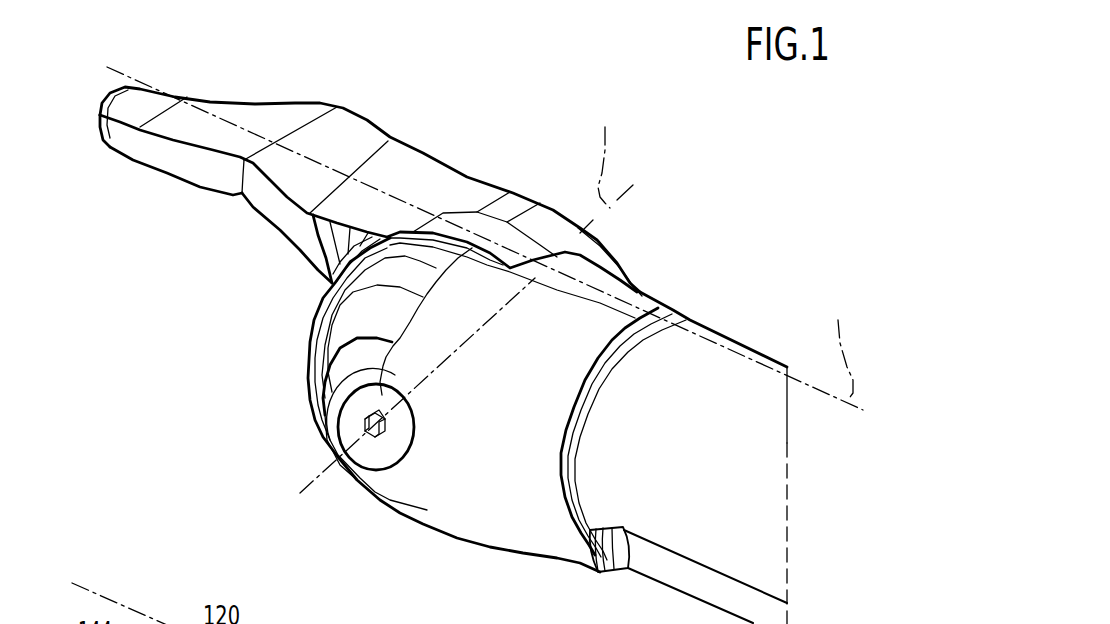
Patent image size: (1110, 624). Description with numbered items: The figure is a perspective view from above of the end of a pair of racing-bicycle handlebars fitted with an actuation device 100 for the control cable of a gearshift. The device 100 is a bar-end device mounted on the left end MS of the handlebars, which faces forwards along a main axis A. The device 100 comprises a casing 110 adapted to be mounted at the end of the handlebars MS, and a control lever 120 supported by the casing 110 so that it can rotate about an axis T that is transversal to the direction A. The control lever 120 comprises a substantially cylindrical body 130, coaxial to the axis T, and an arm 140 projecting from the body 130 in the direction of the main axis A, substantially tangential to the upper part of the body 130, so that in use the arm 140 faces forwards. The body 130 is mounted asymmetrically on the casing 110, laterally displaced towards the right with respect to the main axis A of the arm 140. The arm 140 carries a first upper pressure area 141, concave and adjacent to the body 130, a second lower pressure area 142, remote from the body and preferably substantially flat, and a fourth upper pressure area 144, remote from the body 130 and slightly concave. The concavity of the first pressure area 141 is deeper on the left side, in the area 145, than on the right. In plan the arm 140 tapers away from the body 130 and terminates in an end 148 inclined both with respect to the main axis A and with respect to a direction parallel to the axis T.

The actuation device 100 is at (773, 143).
The casing 110 is at (625, 292).
The control lever 120 is at (343, 107).
The body 130 is at (622, 262).
The arm 140 is at (367, 120).
The first upper pressure area 141 is at (413, 173).
The second lower pressure area 142 is at (128, 163).
The fourth upper pressure area 144 is at (237, 110).
The area of greater concavity depth 145 is at (283, 227).
The end 148 is at (97, 108).
The axis T is at (606, 164).
The main axis A is at (841, 346).
The left end of handlebars MS is at (722, 470).